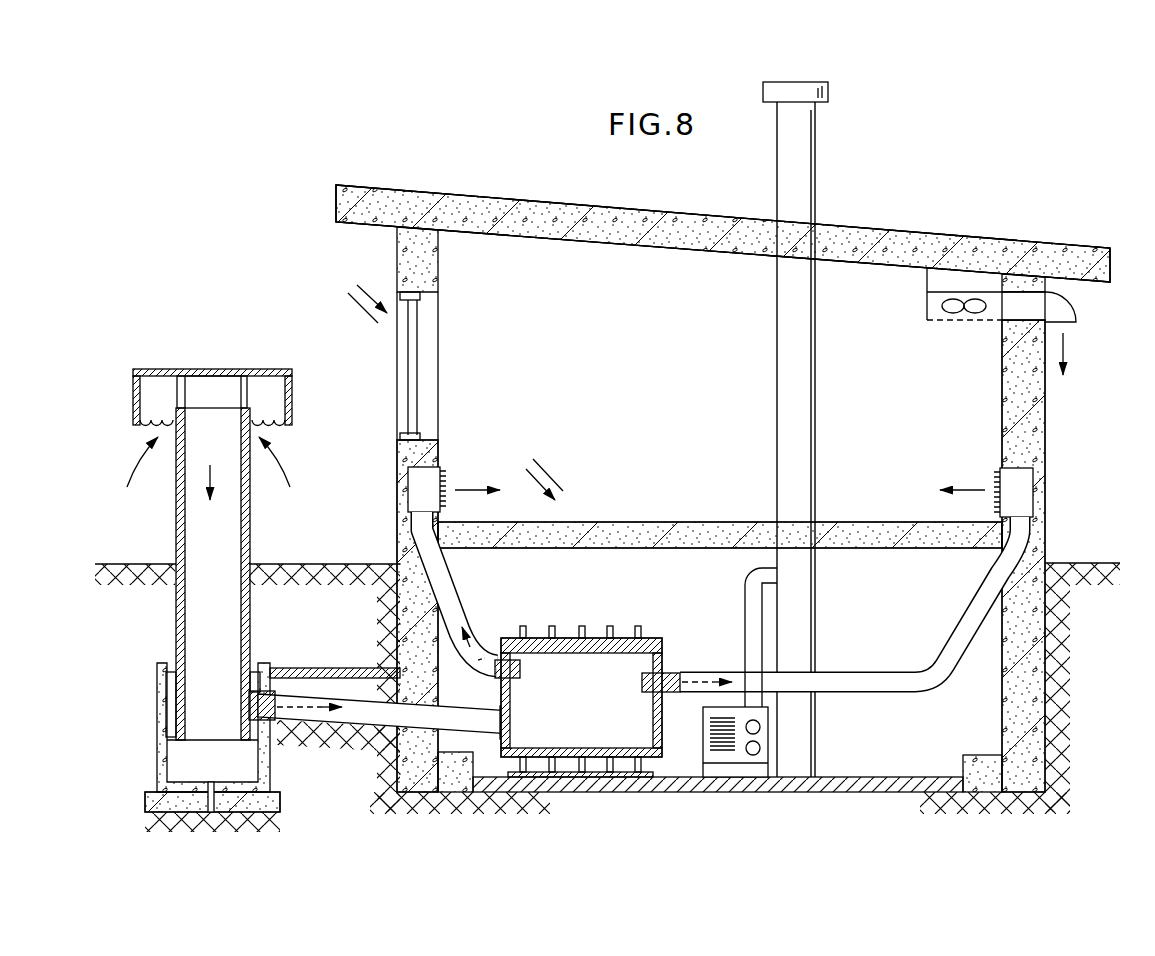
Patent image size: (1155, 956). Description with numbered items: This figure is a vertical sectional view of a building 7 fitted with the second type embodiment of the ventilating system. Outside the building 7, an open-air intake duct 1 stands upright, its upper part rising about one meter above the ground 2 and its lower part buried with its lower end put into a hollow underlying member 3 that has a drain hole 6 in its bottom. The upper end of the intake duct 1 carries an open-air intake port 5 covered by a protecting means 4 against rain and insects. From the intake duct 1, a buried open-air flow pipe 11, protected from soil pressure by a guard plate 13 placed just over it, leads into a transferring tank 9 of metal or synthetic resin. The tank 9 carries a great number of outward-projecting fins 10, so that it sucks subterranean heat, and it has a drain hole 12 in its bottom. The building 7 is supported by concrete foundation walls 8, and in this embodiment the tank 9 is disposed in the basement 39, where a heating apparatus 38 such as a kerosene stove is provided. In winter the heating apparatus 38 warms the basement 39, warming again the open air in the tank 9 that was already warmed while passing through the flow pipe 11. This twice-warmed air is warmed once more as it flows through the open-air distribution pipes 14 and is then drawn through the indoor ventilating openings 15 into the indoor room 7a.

The open-air intake duct 1 is at (176, 489).
The ground 2 is at (300, 564).
The hollow underlying member 3 is at (160, 700).
The protecting means 4 is at (148, 368).
The open-air intake port 5 is at (214, 392).
The drain hole 6 is at (213, 782).
The building 7 is at (572, 214).
The indoor room 7a is at (640, 366).
The concrete foundation walls 8 is at (1003, 700).
The transferring tank 9 is at (565, 650).
The fins 10 is at (583, 773).
The open-air flow pipe 11 is at (352, 713).
The drain hole 12 is at (632, 761).
The guard plate 13 is at (307, 668).
The open-air distribution pipes 14 is at (458, 613).
The indoor ventilating openings 15 is at (442, 473).
The heating apparatus 38 is at (705, 754).
The basement 39 is at (869, 733).